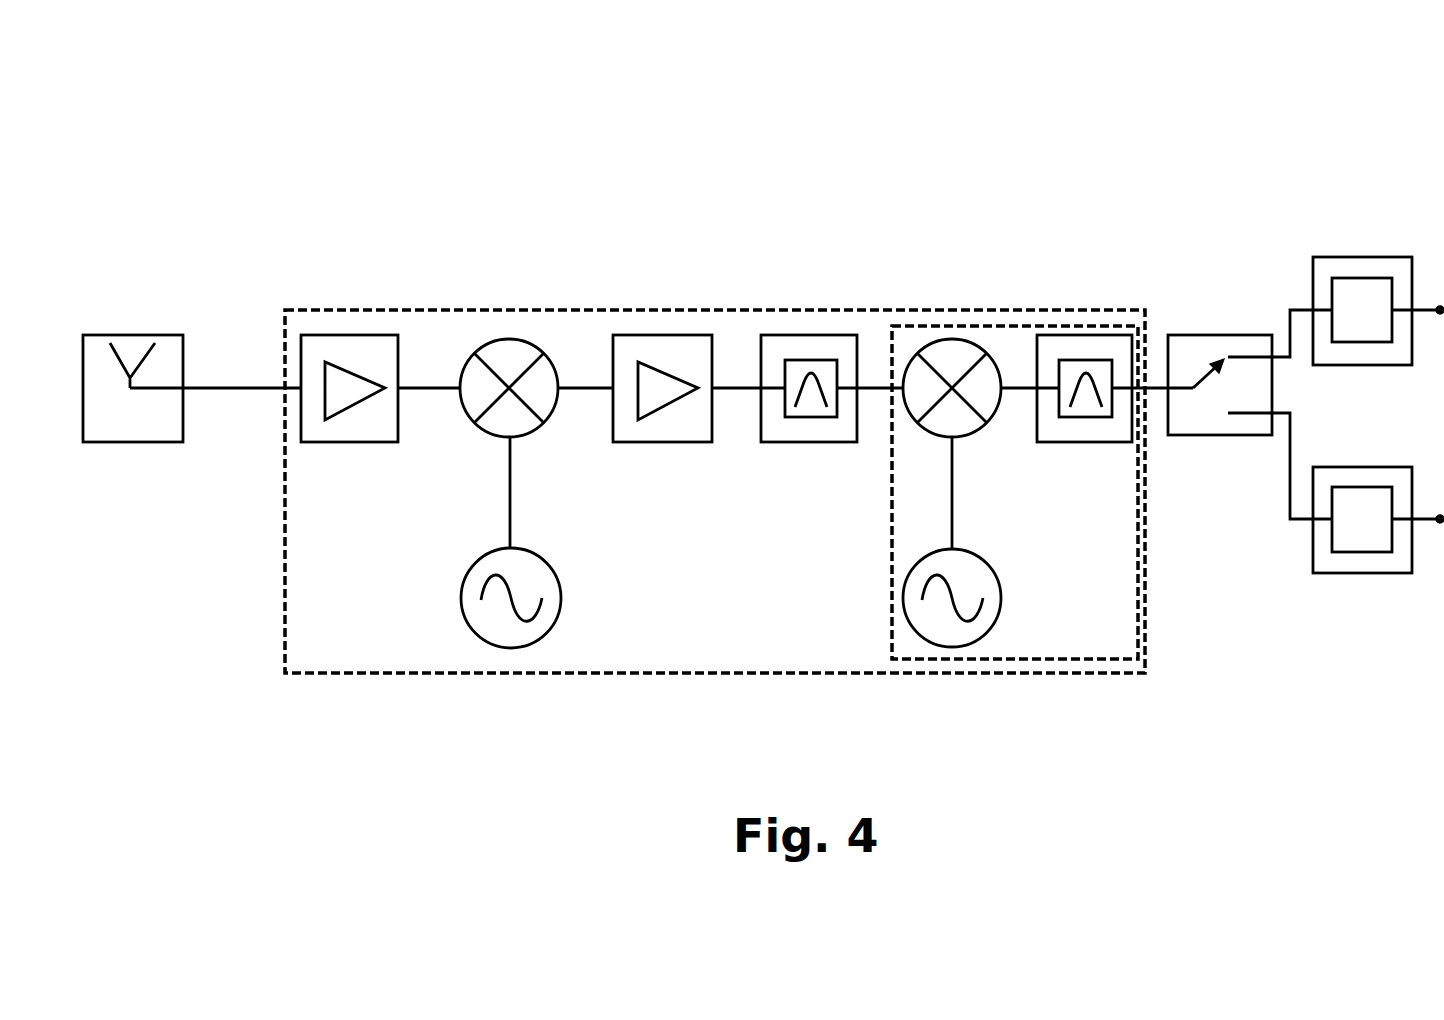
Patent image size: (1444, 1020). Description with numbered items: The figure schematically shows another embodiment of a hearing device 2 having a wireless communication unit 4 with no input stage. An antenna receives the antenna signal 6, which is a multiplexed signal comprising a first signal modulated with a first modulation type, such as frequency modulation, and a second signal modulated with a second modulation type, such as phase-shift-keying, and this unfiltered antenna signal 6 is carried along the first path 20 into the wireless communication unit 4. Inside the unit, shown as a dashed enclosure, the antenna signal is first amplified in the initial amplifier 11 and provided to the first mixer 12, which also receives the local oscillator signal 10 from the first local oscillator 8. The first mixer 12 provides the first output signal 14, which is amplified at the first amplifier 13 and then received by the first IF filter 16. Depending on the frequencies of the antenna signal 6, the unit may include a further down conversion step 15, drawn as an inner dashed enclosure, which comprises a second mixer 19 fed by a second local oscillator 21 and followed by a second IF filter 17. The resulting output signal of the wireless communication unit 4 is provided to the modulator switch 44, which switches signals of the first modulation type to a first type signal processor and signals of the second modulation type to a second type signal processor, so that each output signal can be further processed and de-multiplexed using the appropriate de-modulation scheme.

The hearing device 2 is at (167, 153).
The wireless communication unit 4 is at (1151, 319).
The antenna signal 6 is at (213, 386).
The first local oscillator 8 is at (497, 644).
The local oscillator signal 10 is at (512, 492).
The initial amplifier 11 is at (355, 334).
The first mixer 12 is at (512, 336).
The first amplifier 13 is at (660, 334).
The first output signal 14 is at (733, 386).
The down conversion step 15 is at (1016, 325).
The first IF filter 16 is at (808, 334).
The second IF filter 17 is at (1112, 334).
The second mixer 19 is at (948, 337).
The first path 20 is at (235, 392).
The second local oscillator 21 is at (996, 566).
The modulator switch 44 is at (1238, 437).